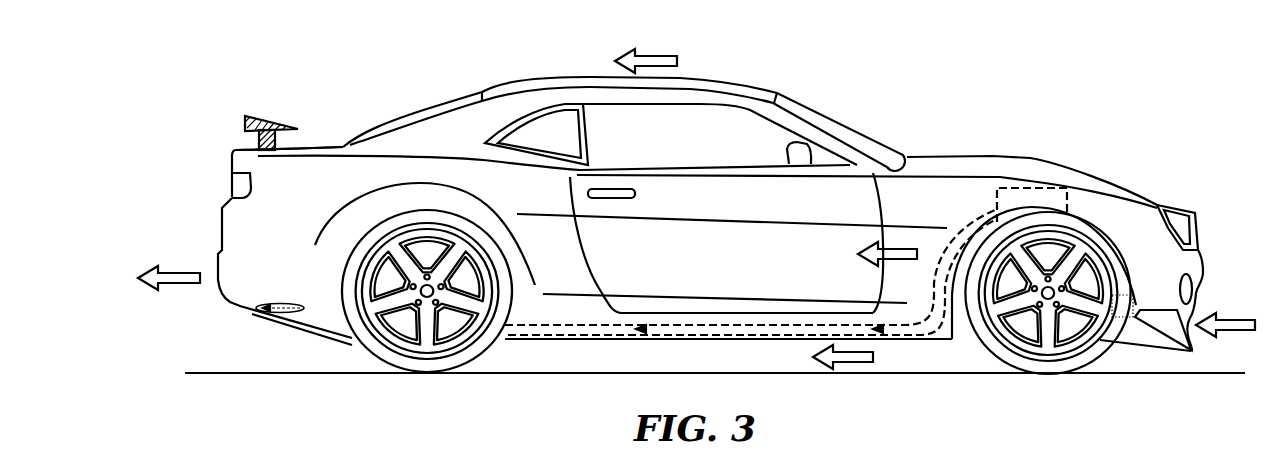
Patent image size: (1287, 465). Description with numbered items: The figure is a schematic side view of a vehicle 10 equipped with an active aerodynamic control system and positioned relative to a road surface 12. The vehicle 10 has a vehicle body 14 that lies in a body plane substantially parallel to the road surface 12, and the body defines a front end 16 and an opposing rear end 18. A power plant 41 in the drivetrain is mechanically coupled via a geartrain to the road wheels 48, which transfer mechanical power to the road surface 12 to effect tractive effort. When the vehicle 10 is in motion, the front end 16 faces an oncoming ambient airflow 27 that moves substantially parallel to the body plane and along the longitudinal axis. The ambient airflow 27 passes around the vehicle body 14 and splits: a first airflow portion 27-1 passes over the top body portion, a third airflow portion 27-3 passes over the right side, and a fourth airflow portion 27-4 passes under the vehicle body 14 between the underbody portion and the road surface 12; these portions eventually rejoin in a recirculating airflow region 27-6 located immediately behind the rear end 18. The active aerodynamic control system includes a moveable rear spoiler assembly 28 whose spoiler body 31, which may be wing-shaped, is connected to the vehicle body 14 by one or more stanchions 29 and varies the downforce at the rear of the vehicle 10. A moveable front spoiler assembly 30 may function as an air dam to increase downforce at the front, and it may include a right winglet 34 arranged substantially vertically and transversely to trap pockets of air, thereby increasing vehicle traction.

The vehicle 10 is at (886, 128).
The road surface 12 is at (1204, 373).
The vehicle body 14 is at (744, 259).
The front end 16 is at (1208, 260).
The rear end 18 is at (210, 256).
The ambient airflow 27 is at (1237, 318).
The first airflow portion 27-1 is at (677, 60).
The third airflow portion 27-3 is at (892, 250).
The fourth airflow portion 27-4 is at (847, 368).
The recirculating airflow region 27-6 is at (180, 267).
The rear spoiler assembly 28 is at (271, 114).
The stanchion 29 is at (285, 140).
The front spoiler assembly 30 is at (1184, 336).
The spoiler body 31 is at (246, 125).
The right winglet 34 is at (1143, 341).
The power plant 41 is at (1030, 188).
The road wheels 48 is at (426, 362).